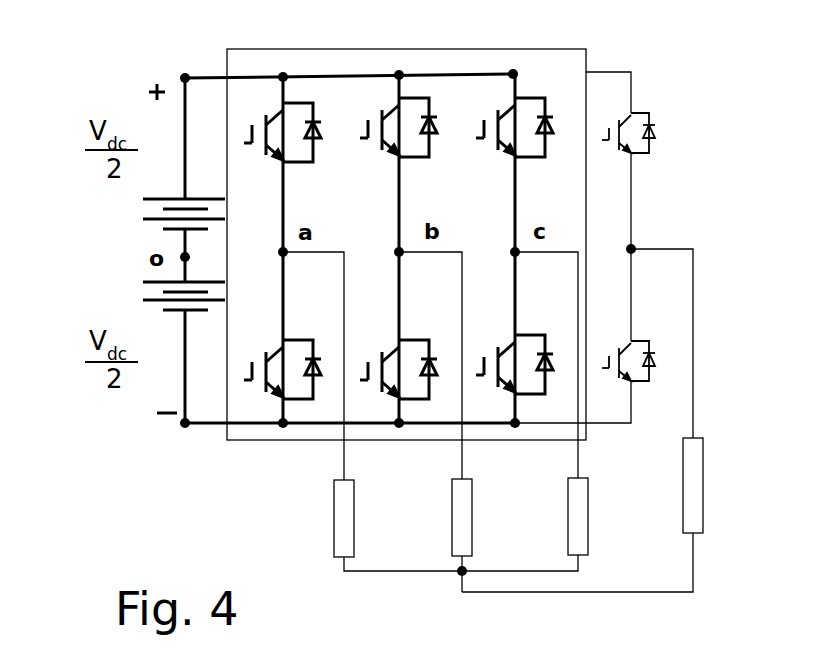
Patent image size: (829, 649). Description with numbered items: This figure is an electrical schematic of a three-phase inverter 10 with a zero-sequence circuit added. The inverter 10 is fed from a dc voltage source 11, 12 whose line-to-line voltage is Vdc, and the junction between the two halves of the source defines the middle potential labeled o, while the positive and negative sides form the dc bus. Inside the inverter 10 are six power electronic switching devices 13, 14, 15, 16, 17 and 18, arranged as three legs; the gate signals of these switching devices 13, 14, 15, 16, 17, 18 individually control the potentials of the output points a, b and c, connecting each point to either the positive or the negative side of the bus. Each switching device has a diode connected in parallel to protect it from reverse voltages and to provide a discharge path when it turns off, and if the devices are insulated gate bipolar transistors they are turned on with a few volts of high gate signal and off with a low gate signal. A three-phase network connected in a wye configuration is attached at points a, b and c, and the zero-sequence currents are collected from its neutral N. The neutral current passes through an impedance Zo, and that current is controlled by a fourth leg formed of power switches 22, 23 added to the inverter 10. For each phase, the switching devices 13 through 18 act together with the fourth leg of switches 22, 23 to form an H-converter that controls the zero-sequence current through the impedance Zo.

The three-phase inverter 10 is at (500, 44).
The dc voltage source 11 is at (143, 218).
The dc voltage source 12 is at (150, 300).
The power electronic switching device 13 is at (247, 139).
The power electronic switching device 14 is at (256, 367).
The power electronic switching device 15 is at (366, 137).
The power electronic switching device 16 is at (370, 373).
The power electronic switching device 17 is at (482, 134).
The power electronic switching device 18 is at (488, 358).
The power switch 22 is at (614, 150).
The power switch 23 is at (620, 357).
The neutral N is at (460, 576).
The impedance Zo is at (683, 508).